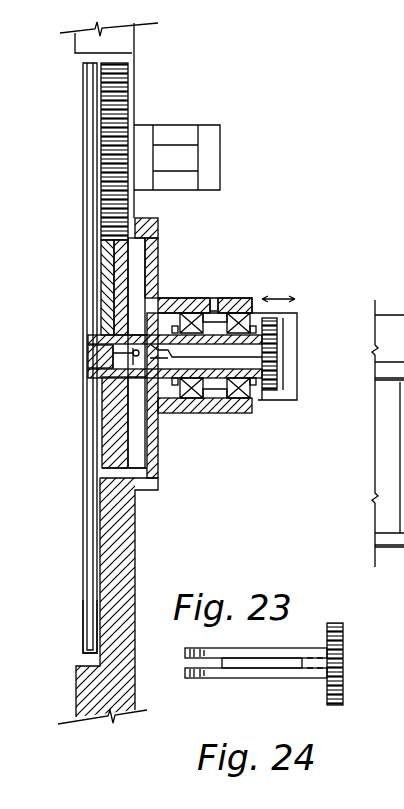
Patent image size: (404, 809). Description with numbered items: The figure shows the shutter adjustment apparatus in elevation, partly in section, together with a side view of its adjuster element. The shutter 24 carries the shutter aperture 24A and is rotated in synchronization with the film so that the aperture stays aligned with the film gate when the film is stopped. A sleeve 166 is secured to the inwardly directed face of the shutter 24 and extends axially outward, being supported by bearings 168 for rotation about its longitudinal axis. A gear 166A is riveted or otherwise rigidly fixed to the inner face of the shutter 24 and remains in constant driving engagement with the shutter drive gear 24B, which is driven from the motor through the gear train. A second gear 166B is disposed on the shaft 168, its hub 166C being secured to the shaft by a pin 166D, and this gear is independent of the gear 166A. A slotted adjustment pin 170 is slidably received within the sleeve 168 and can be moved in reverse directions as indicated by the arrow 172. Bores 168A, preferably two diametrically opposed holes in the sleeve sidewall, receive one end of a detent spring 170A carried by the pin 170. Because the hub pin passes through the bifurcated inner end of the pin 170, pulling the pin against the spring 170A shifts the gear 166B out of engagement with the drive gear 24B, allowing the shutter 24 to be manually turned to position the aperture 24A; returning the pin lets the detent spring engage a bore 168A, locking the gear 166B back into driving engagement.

In FIG. 23, the shutter 24 is at (83, 503).
In FIG. 23, the shutter aperture 24A is at (92, 627).
In FIG. 23, the shutter drive gear 24B is at (122, 95).
In FIG. 23, the sleeve 166 is at (135, 330).
In FIG. 23, the gear 166A is at (150, 487).
In FIG. 23, the second gear 166B is at (113, 262).
In FIG. 23, the hub 166C is at (115, 293).
In FIG. 23, the pin 166D is at (132, 352).
In FIG. 23, the bearings 168 is at (213, 406).
In FIG. 23, the bores 168A is at (163, 413).
In FIG. 23, the slotted adjustment pin 170 is at (278, 330).
In FIG. 24, the slotted adjustment pin 170 is at (343, 677).
In FIG. 24, the detent spring 170A is at (237, 663).
In FIG. 23, the arrow 172 is at (286, 297).